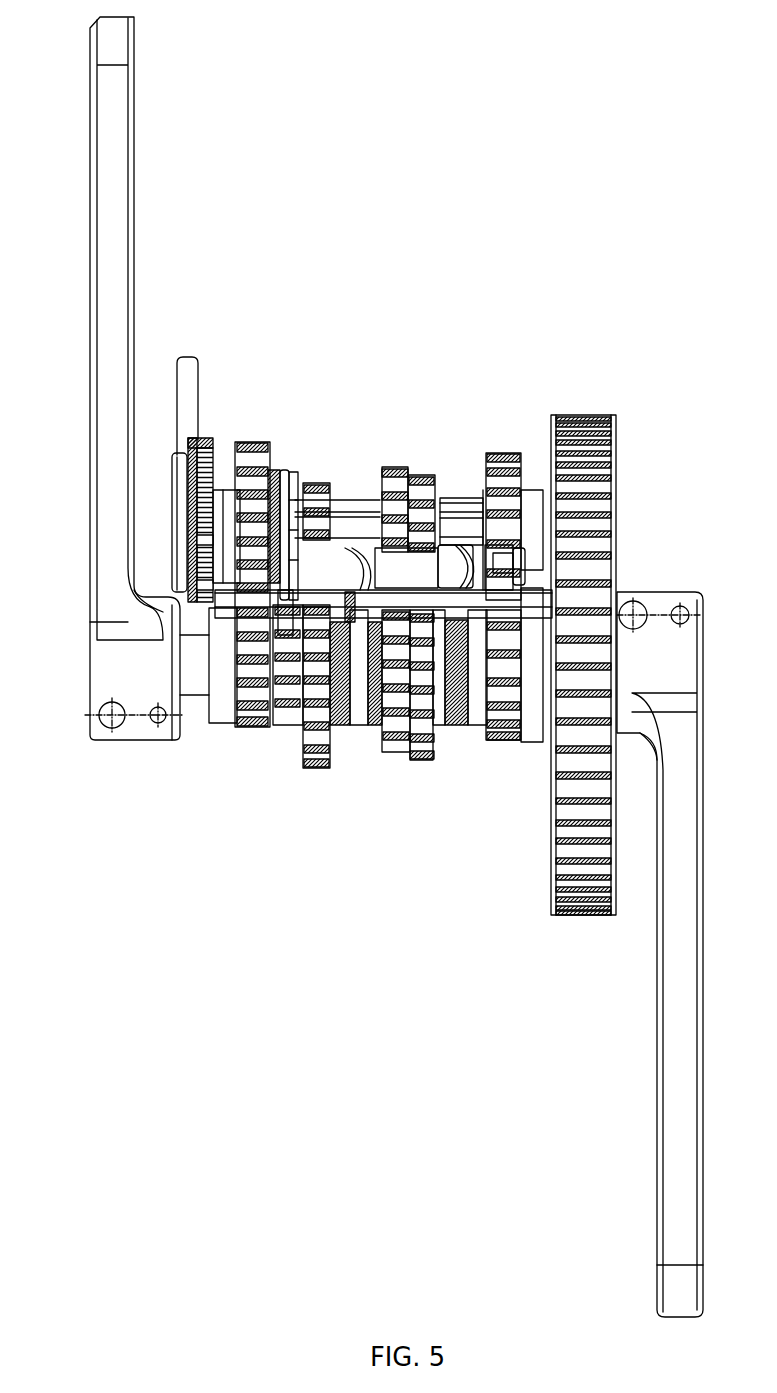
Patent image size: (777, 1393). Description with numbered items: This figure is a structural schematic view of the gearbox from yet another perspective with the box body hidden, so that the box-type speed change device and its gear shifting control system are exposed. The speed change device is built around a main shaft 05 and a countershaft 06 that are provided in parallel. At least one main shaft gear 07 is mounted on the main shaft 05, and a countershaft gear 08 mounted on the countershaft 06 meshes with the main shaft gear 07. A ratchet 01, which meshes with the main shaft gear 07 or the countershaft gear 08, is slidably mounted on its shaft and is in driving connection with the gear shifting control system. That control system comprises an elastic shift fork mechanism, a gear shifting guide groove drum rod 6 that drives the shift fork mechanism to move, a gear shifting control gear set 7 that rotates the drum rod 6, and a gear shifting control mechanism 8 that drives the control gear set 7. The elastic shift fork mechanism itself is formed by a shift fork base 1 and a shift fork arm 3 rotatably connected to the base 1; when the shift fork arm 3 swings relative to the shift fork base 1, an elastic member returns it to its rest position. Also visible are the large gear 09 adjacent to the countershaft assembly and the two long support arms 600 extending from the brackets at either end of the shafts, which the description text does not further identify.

The support arm 600 is at (110, 227).
The gear shifting control mechanism 8 is at (172, 437).
The main shaft 05 is at (198, 673).
The gear shifting control gear set 7 is at (217, 487).
The ratchet 01 is at (270, 480).
The shift fork base 1 is at (348, 603).
The shift fork arm 3 is at (330, 678).
The countershaft 06 is at (342, 513).
The gear shifting guide groove drum rod 6 is at (407, 560).
The countershaft gear 08 is at (548, 436).
The main shaft gear 07 is at (510, 733).
The output gear 09 is at (605, 525).